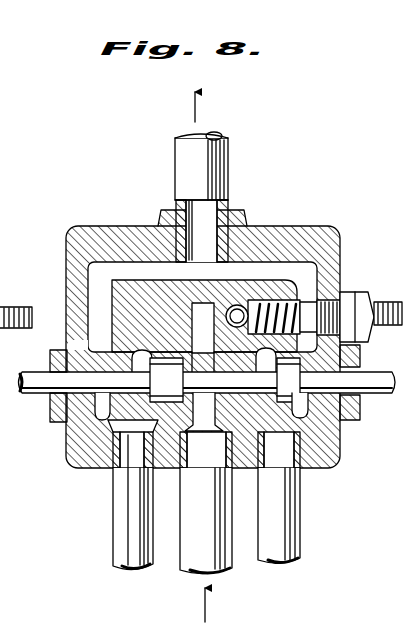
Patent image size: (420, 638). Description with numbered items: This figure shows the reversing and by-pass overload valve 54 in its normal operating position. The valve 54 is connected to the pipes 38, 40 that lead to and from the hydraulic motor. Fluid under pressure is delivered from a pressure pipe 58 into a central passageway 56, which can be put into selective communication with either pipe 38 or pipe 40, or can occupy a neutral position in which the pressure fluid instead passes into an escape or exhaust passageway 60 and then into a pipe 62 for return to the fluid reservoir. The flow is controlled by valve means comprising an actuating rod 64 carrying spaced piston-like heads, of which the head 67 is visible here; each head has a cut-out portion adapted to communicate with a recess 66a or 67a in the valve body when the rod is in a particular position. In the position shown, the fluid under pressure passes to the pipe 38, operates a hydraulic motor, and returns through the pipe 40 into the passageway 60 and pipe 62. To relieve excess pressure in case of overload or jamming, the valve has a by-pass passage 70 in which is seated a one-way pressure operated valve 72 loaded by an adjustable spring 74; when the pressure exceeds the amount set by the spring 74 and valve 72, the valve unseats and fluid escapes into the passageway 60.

The pipe 38 is at (286, 509).
The pipe 40 is at (128, 539).
The reversing and by-pass overload valve 54 is at (268, 236).
The central passageway 56 is at (305, 415).
The pressure pipe 58 is at (192, 548).
The escape or exhaust passageway 60 is at (110, 266).
The pipe 62 is at (223, 141).
The actuating rod 64 is at (392, 385).
The recess 66a is at (113, 348).
The piston-like head 67 is at (225, 380).
The recess 67a is at (201, 382).
The by-pass passage 70 is at (192, 310).
The one-way pressure operated valve 72 is at (237, 310).
The adjustable spring 74 is at (337, 293).